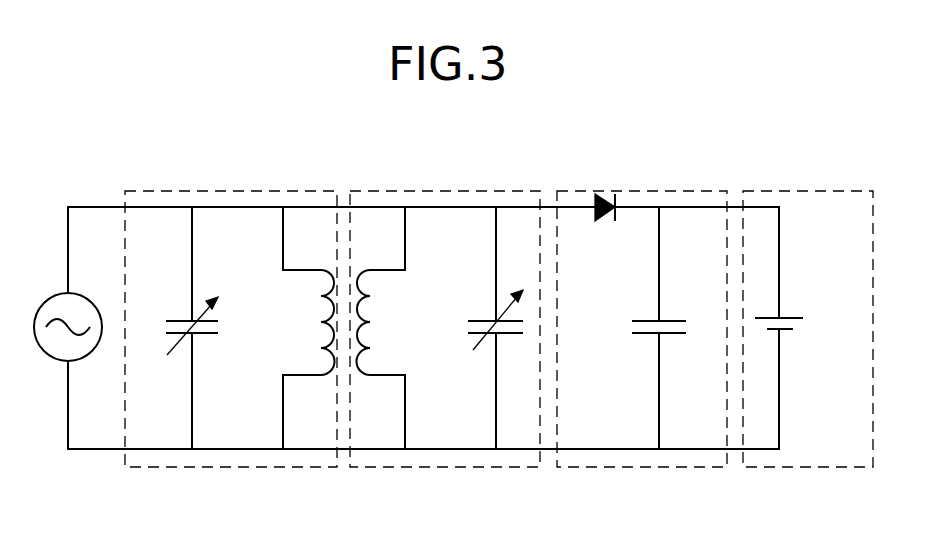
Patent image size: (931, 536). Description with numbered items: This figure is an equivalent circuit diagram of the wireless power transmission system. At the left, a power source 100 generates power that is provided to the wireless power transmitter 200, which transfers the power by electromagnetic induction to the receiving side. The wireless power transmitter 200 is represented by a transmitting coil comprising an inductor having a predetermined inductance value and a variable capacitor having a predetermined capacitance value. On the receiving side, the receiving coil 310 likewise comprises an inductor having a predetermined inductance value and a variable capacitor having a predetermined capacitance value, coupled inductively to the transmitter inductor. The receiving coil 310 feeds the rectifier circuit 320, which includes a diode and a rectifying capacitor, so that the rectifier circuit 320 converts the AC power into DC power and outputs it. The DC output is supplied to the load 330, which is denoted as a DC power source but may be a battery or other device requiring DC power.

The power source 100 is at (45, 301).
The wireless power transmitter 200 is at (248, 190).
The receiving coil 310 is at (470, 190).
The rectifier circuit 320 is at (662, 190).
The load 330 is at (806, 190).